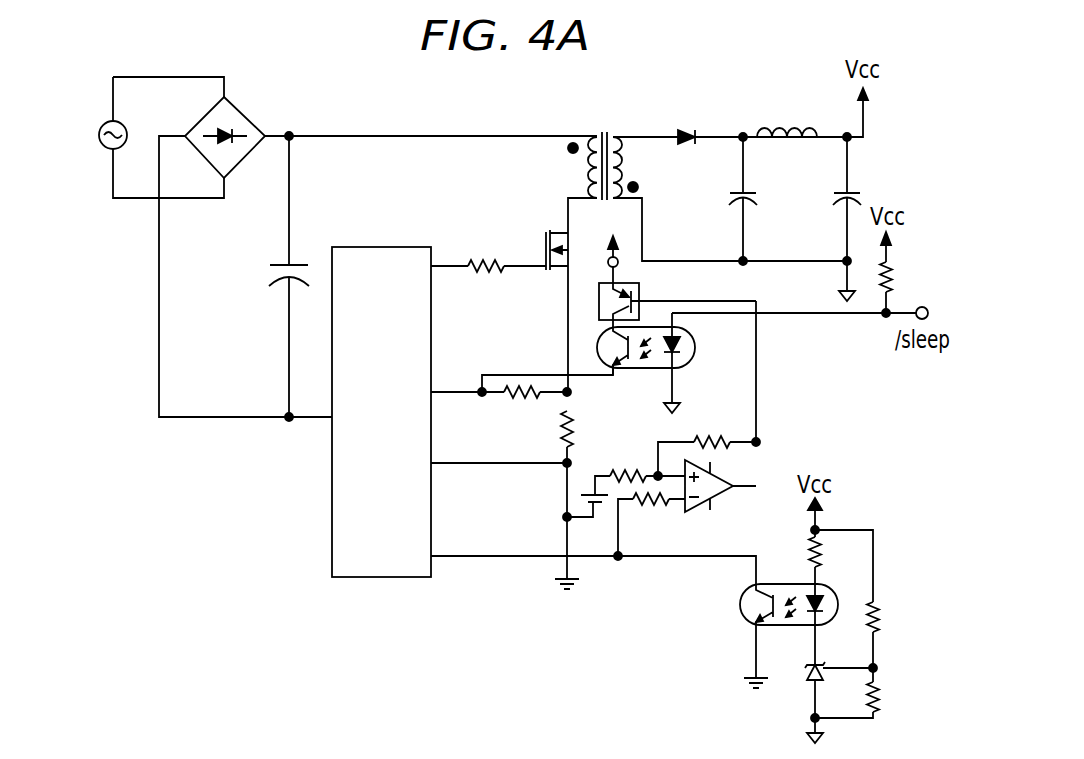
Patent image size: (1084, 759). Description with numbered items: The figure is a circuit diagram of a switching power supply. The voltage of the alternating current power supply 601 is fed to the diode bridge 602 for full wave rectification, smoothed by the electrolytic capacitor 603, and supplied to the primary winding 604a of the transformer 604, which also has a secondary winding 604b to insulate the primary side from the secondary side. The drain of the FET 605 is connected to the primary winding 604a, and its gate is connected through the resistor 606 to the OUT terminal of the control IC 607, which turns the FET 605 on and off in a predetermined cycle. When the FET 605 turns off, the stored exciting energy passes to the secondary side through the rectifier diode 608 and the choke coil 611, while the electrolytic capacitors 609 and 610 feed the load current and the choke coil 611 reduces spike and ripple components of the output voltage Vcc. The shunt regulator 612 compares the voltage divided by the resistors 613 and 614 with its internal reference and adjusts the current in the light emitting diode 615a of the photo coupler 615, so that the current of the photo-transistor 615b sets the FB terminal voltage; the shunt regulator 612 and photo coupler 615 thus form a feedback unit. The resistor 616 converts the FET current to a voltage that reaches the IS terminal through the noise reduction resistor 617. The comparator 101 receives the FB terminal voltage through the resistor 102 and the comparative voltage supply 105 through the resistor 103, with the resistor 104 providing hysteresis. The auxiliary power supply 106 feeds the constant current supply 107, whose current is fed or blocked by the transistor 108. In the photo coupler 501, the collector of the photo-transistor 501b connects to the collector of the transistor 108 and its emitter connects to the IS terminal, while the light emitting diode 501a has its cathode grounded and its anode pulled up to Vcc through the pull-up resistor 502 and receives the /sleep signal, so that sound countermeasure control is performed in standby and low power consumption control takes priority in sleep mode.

The alternating current power supply 601 is at (98, 150).
The diode bridge 602 is at (240, 112).
The electrolytic capacitor 603 is at (264, 284).
The transformer 604 is at (604, 130).
The primary winding 604a is at (585, 167).
The secondary winding 604b is at (627, 163).
The FET 605 is at (543, 245).
The resistor 606 is at (478, 260).
The control IC 607 is at (380, 247).
The rectifier diode 608 is at (688, 128).
The electrolytic capacitor 609 is at (758, 196).
The electrolytic capacitor 610 is at (860, 196).
The choke coil 611 is at (797, 127).
The shunt regulator 612 is at (808, 672).
The resistor 613 is at (880, 616).
The resistor 614 is at (880, 696).
The photo coupler 615 is at (804, 559).
The light emitting diode 615a is at (830, 603).
The photo-transistor 615b is at (758, 605).
The resistor 616 is at (560, 428).
The noise reduction resistor 617 is at (518, 386).
The photo coupler 501 is at (657, 364).
The light emitting diode 501a is at (680, 352).
The photo-transistor 501b is at (599, 347).
The pull-up resistor 502 is at (891, 275).
The comparator 101 is at (720, 500).
The resistor 102 is at (648, 505).
The resistor 103 is at (625, 470).
The resistor 104 is at (745, 440).
The comparative voltage supply 105 is at (583, 492).
The auxiliary power supply 106 is at (620, 244).
The constant current supply 107 is at (620, 262).
The transistor 108 is at (640, 293).